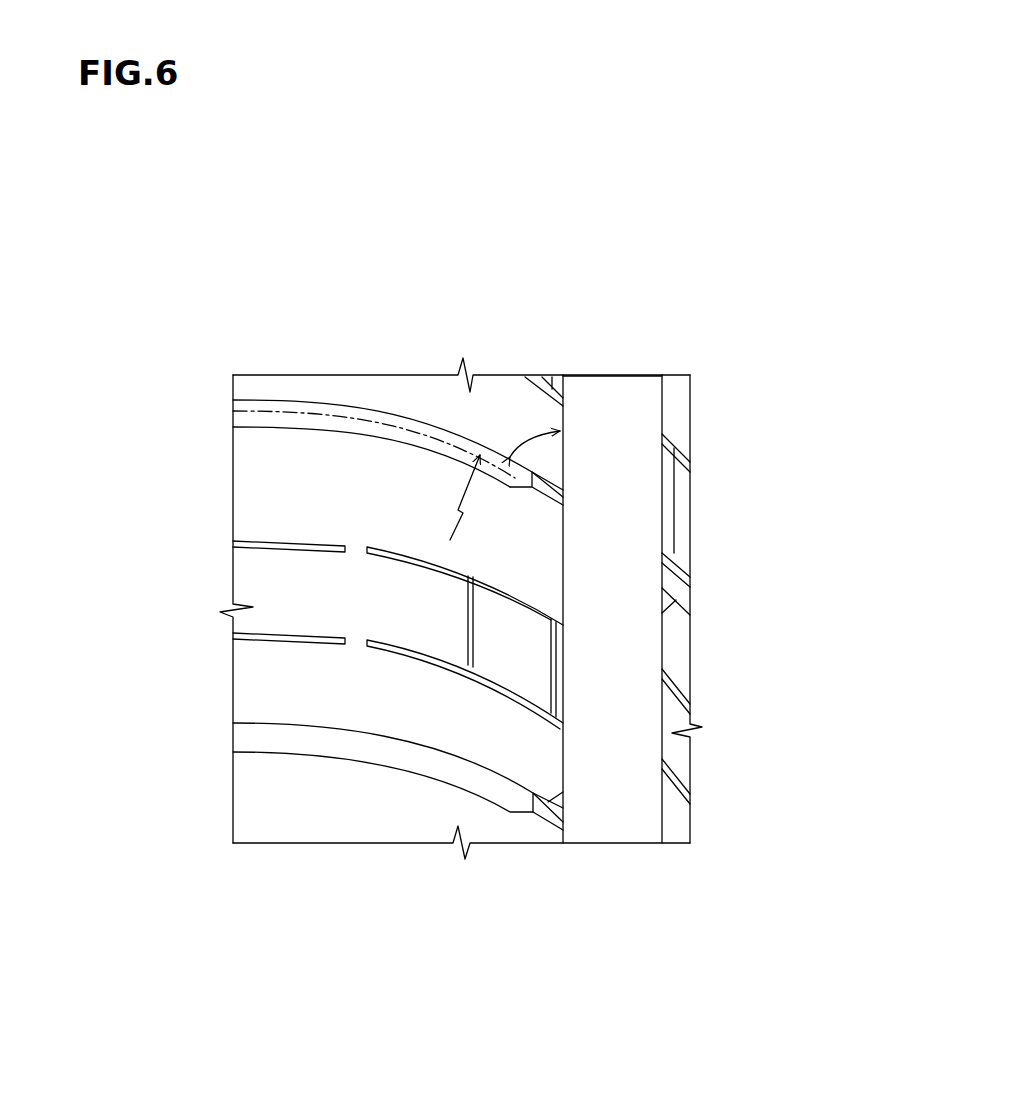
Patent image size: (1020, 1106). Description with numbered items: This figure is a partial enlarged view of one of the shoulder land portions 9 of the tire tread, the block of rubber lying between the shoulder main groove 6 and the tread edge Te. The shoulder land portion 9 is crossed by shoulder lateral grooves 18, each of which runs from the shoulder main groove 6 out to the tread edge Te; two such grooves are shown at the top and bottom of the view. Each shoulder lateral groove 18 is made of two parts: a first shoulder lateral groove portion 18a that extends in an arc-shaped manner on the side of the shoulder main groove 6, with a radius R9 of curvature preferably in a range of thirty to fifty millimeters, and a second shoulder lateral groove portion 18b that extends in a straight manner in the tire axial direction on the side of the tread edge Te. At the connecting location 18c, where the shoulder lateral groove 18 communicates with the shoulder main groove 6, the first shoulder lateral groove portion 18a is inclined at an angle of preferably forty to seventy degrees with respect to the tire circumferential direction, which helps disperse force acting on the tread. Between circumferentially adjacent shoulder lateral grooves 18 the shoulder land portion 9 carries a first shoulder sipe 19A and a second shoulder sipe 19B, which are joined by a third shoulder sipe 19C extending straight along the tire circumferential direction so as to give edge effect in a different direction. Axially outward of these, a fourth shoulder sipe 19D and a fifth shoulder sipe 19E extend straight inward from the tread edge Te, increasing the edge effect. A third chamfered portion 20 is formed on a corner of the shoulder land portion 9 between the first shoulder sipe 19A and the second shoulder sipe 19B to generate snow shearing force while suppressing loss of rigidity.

The tread edge Te is at (233, 445).
The shoulder land portion 9 is at (446, 332).
The shoulder lateral groove 18 is at (509, 586).
The first shoulder lateral groove portion 18a is at (432, 428).
The second shoulder lateral groove portion 18b is at (257, 403).
The connecting location 18c is at (563, 497).
The radius of curvature R9 is at (445, 511).
The shoulder main groove 6 is at (608, 427).
The fifth shoulder sipe 19E is at (297, 541).
The fourth shoulder sipe 19D is at (298, 637).
The second shoulder sipe 19B is at (510, 590).
The first shoulder sipe 19A is at (500, 683).
The third shoulder sipe 19C is at (467, 620).
The third chamfered portion 20 is at (557, 667).